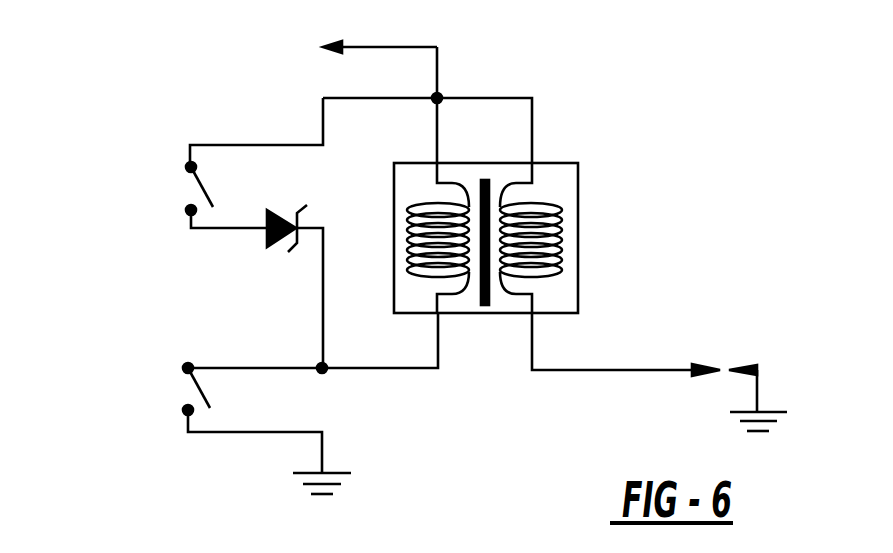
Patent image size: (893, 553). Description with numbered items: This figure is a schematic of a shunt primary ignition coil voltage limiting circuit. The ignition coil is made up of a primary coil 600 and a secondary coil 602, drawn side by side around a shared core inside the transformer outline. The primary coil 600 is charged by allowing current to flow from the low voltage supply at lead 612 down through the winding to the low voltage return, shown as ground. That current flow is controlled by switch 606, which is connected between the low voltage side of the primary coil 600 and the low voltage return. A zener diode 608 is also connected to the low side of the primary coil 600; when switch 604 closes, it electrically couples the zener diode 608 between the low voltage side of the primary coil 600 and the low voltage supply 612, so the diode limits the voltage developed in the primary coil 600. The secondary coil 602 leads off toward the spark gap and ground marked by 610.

The primary coil 600 is at (423, 202).
The secondary coil 602 is at (542, 288).
The switch 604 is at (188, 190).
The switch 606 is at (185, 391).
The zener diode 608 is at (273, 242).
The spark gap 610 is at (727, 360).
The lead 612 is at (354, 48).